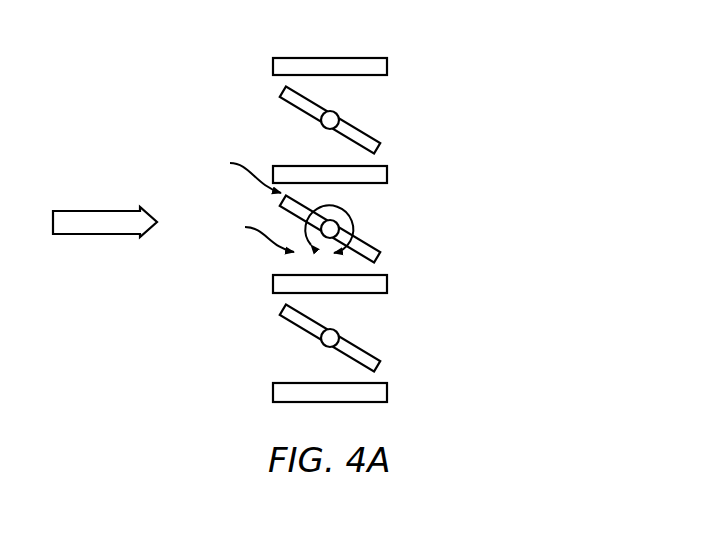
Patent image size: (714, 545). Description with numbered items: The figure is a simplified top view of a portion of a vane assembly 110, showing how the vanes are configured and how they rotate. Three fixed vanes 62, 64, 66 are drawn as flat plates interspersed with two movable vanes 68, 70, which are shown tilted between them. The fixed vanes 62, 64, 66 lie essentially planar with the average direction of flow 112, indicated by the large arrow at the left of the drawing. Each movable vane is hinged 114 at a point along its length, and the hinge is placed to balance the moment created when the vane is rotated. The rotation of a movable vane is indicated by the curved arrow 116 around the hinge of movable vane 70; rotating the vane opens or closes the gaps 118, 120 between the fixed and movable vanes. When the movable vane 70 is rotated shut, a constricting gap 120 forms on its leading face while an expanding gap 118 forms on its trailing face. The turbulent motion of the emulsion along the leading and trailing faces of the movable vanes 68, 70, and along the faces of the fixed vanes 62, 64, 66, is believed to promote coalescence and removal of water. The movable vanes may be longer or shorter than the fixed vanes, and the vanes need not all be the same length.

The vane assembly 110 is at (486, 71).
The fixed vane 62 is at (370, 58).
The fixed vane 64 is at (388, 175).
The fixed vane 66 is at (390, 283).
The movable vane 68 is at (372, 135).
The movable vane 70 is at (370, 243).
The average direction of flow 112 is at (93, 234).
The hinge 114 is at (337, 112).
The arrow indicating vane rotation 116 is at (343, 212).
The gap 118 is at (230, 171).
The gap 120 is at (243, 230).